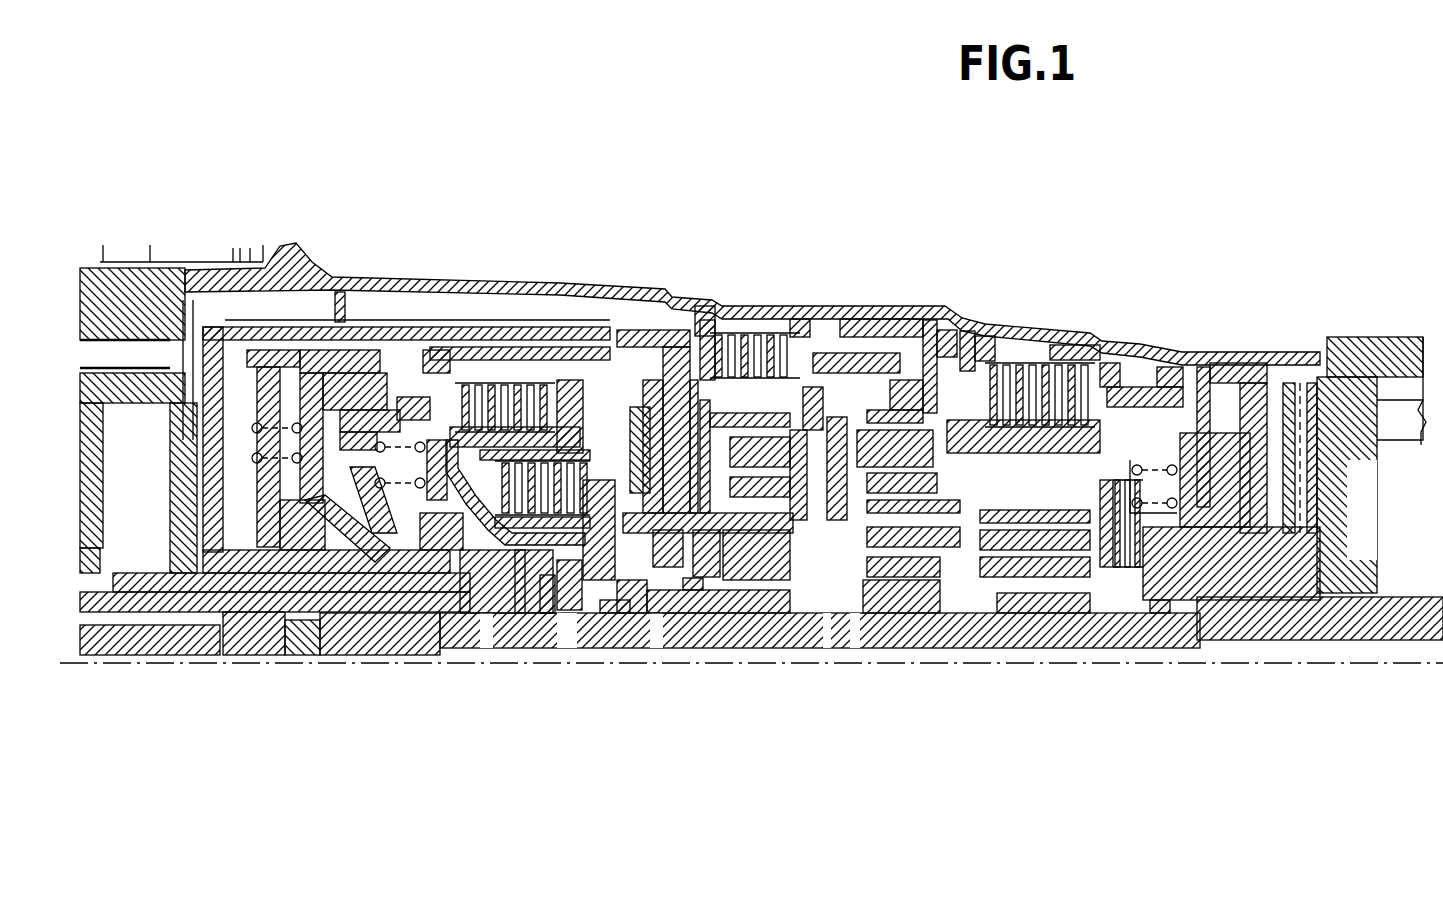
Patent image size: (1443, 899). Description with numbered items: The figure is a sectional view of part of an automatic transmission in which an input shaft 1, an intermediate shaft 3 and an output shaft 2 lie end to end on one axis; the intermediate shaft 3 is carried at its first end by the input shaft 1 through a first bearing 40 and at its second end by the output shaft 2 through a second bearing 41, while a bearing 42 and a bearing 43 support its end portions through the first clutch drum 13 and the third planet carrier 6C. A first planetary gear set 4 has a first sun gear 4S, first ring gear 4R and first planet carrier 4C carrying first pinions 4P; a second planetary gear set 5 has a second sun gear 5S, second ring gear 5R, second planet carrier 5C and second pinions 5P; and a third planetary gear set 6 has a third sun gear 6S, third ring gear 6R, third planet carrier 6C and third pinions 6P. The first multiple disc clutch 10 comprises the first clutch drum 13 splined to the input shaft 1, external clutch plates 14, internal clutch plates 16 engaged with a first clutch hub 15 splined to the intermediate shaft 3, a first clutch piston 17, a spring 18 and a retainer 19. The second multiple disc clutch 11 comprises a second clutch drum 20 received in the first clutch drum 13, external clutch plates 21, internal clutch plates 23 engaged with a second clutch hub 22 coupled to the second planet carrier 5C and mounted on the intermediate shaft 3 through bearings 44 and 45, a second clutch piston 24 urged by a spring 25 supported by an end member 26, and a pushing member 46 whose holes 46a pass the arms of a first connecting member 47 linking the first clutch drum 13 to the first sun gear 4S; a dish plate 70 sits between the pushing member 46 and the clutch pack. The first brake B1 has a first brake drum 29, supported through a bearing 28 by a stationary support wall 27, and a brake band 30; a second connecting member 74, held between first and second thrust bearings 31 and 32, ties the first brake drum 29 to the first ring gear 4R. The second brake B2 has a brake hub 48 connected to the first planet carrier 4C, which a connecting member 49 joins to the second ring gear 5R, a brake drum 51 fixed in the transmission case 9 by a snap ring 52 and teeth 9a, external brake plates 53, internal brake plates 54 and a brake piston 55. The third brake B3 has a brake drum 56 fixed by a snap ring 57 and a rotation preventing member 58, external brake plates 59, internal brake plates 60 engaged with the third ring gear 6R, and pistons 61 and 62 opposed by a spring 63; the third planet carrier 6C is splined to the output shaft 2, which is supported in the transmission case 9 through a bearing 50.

The input shaft 1 is at (142, 645).
The output shaft 2 is at (1335, 620).
The intermediate shaft 3 is at (1055, 600).
The first planetary gear set 4 is at (848, 396).
The first ring gear 4R is at (880, 350).
The first sun gear 4S is at (745, 560).
The first pinions 4P is at (770, 560).
The first planet carrier 4C is at (810, 580).
The second planetary gear set 5 is at (942, 390).
The second ring gear 5R is at (925, 580).
The second sun gear 5S is at (900, 560).
The second pinions 5P is at (885, 580).
The second planet carrier 5C is at (845, 580).
The third planetary gear set 6 is at (1114, 436).
The third ring gear 6R is at (1040, 380).
The third sun gear 6S is at (1010, 600).
The third pinions 6P is at (1020, 580).
The third planet carrier 6C is at (1210, 560).
The transmission case 9 is at (1287, 347).
The teeth 9a is at (865, 375).
The first multiple disc clutch 10 is at (455, 390).
The second multiple disc clutch 11 is at (610, 345).
The first clutch drum 13 is at (523, 590).
The first external clutch plates 14 is at (520, 390).
The first clutch hub 15 is at (585, 600).
The first internal clutch plates 16 is at (540, 400).
The first clutch piston 17 is at (400, 400).
The spring 18 is at (372, 600).
The retainer 19 is at (413, 588).
The second clutch drum 20 is at (560, 395).
The second external clutch plates 21 is at (600, 415).
The second clutch hub 22 is at (465, 565).
The second internal clutch plates 23 is at (545, 590).
The second clutch piston 24 is at (332, 306).
The spring 25 is at (290, 395).
The end member 26 is at (200, 345).
The stationary support wall 27 is at (137, 275).
The bearing 28 is at (295, 600).
The first brake drum 29 is at (160, 340).
The brake band 30 is at (240, 420).
The first thrust bearing 31 is at (640, 600).
The second thrust bearing 32 is at (715, 590).
The first bearing 40 is at (505, 590).
The second bearing 41 is at (1145, 590).
The bearing 42 is at (575, 600).
The bearing 43 is at (1125, 600).
The bearing 44 is at (700, 600).
The bearing 45 is at (830, 560).
The pushing member 46 is at (690, 340).
The holes 46a is at (645, 380).
The first connecting member 47 is at (590, 340).
The brake hub 48 is at (705, 300).
The connecting member 49 is at (915, 330).
The bearing 50 is at (1158, 600).
The brake drum 51 is at (955, 325).
The snap ring 52 is at (740, 340).
The external brake plates 53 is at (810, 330).
The internal brake plates 54 is at (772, 340).
The brake piston 55 is at (975, 325).
The brake drum 56 is at (1060, 345).
The snap ring 57 is at (985, 345).
The member for preventing rotation 58 is at (1172, 347).
The external brake plates 59 is at (1138, 338).
The internal brake plates 60 is at (1090, 350).
The piston 61 is at (1178, 347).
The piston 62 is at (1243, 347).
The spring 63 is at (1225, 560).
The dish plate 70 is at (625, 600).
The second connecting member 74 is at (700, 310).
The first brake B1 is at (340, 285).
The second brake B2 is at (827, 317).
The third brake B3 is at (1102, 380).